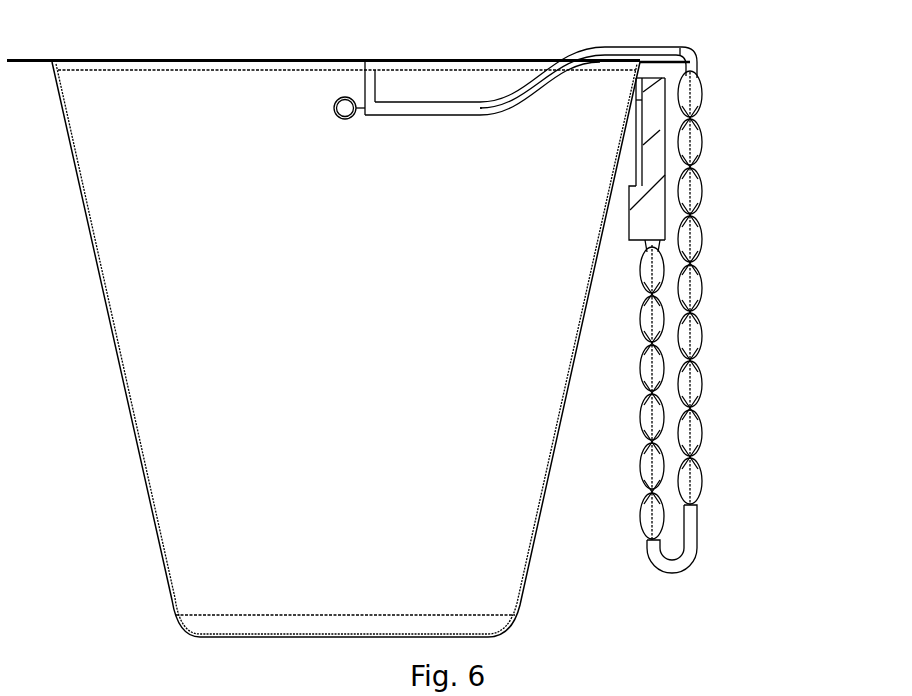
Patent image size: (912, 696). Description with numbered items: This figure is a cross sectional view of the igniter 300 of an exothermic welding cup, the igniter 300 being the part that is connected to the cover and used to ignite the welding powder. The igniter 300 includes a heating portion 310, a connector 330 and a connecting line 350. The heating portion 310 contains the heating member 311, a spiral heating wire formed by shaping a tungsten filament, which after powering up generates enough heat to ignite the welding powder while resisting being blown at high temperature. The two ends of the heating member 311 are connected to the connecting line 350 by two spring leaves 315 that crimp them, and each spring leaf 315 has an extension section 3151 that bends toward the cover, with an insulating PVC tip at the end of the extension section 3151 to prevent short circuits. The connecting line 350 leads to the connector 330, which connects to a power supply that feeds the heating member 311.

The igniter 300 is at (732, 111).
The heating portion 310 is at (352, 322).
The heating member 311 is at (336, 114).
The spring leaf 315 is at (442, 112).
The extension section 3151 is at (374, 83).
The connector 330 is at (642, 213).
The connecting line 350 is at (694, 190).